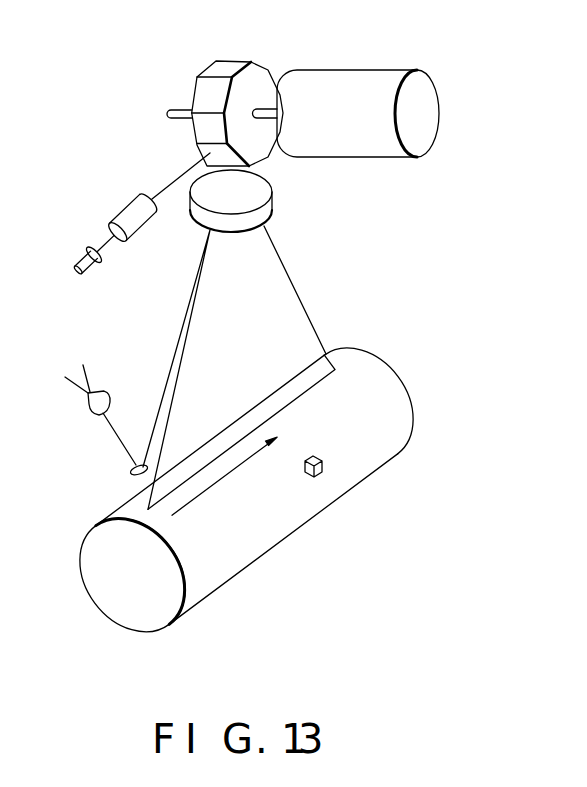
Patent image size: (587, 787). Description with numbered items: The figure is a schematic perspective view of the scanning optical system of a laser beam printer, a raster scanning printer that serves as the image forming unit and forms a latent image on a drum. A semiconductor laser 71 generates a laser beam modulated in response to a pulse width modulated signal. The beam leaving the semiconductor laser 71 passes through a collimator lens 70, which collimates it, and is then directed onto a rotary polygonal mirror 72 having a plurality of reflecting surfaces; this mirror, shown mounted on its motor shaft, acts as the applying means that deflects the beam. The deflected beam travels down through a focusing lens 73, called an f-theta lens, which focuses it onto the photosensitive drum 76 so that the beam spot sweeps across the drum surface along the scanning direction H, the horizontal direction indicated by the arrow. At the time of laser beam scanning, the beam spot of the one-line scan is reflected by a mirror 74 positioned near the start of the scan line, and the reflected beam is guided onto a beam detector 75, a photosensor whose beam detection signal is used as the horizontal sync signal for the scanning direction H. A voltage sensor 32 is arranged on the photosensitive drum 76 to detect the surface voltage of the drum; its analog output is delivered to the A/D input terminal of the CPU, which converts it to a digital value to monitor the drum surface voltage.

The rotary polygonal mirror 72 is at (225, 66).
The collimator lens 70 is at (130, 213).
The semiconductor laser 71 is at (86, 253).
The focusing lens 73 is at (273, 205).
The photosensitive drum 76 is at (385, 385).
The voltage sensor 32 is at (325, 462).
The mirror 74 is at (130, 472).
The beam detector 75 is at (90, 407).
The scanning direction H is at (238, 466).